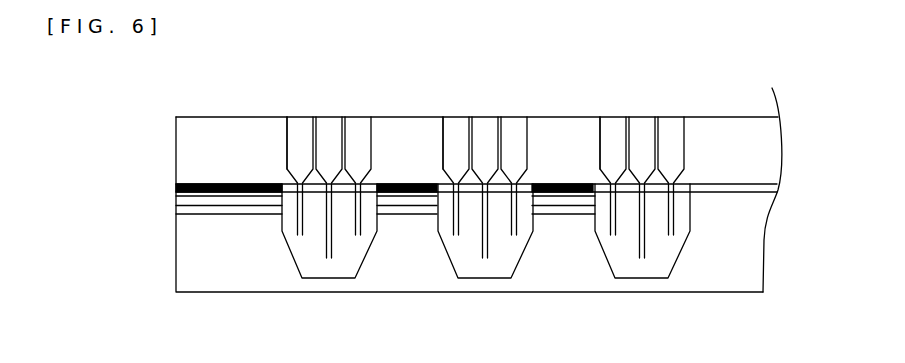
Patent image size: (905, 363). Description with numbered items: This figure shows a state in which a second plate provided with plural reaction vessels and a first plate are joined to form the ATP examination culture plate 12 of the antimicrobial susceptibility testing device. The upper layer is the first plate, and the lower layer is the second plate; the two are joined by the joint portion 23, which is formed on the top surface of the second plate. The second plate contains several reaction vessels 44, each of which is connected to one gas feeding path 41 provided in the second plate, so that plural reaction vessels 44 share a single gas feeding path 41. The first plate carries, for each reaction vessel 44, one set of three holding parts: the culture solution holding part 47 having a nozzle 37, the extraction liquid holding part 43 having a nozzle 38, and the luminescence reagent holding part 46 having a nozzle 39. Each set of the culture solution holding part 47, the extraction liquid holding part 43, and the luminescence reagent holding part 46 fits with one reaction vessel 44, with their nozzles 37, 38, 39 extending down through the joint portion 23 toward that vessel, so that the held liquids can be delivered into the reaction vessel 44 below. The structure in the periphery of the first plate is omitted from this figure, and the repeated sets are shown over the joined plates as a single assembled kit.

The ATP examination culture plate 12 is at (792, 86).
The joint portion 23 is at (182, 183).
The gas feeding path 41 is at (176, 207).
The extraction liquid holding part 43 is at (287, 157).
The luminescence reagent holding part 46 is at (357, 117).
The culture solution holding part 47 is at (320, 117).
The reaction vessel 44 is at (320, 279).
The nozzle 38 is at (294, 229).
The nozzle 37 is at (330, 238).
The nozzle 39 is at (361, 231).